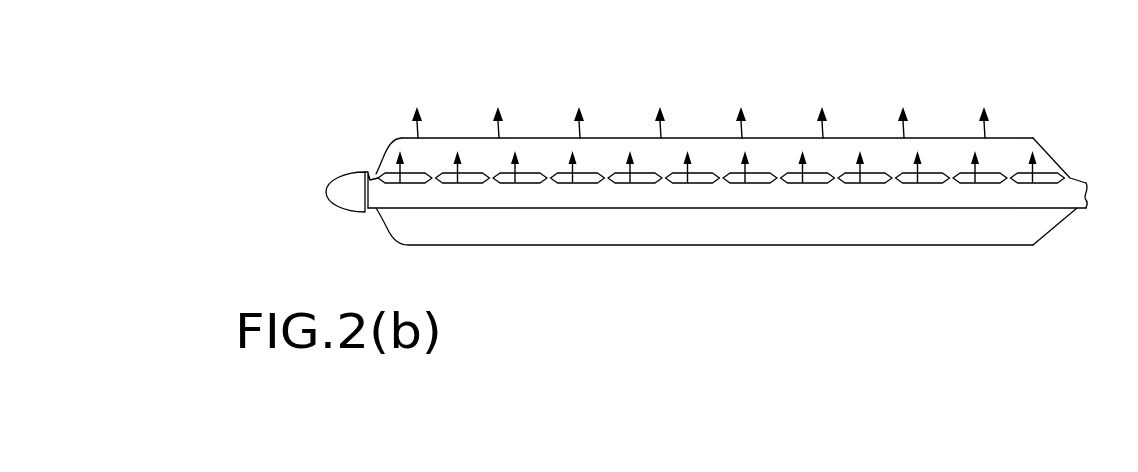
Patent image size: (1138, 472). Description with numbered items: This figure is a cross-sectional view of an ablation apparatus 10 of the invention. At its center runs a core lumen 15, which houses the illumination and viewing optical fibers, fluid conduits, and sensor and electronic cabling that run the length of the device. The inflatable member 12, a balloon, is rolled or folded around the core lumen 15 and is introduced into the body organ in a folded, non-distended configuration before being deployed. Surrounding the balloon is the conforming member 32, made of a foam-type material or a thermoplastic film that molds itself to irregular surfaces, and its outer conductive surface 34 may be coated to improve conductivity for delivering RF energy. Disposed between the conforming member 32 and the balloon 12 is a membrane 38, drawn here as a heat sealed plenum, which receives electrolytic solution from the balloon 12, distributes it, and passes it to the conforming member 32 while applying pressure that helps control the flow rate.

The ablation apparatus 10 is at (960, 108).
The inflatable member 12 is at (845, 228).
The core lumen 15 is at (387, 195).
The conforming member 32 is at (452, 149).
The conductive surface 34 is at (543, 139).
The membrane 38 is at (398, 176).